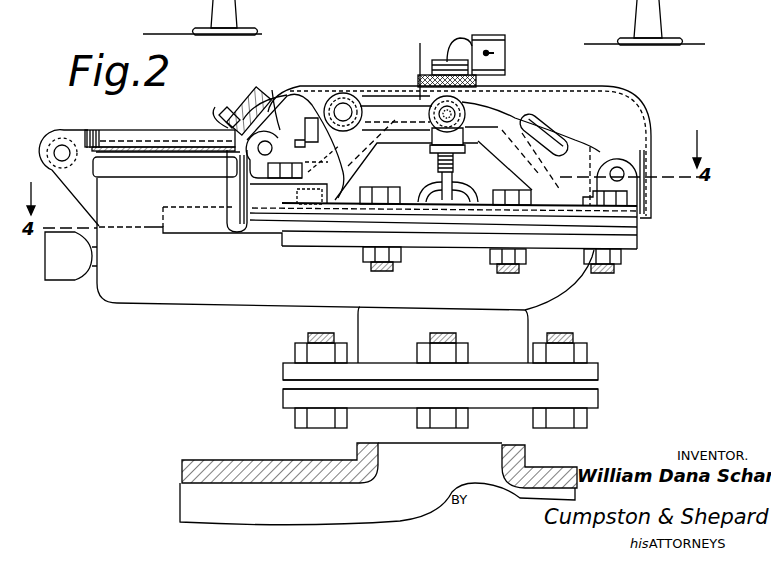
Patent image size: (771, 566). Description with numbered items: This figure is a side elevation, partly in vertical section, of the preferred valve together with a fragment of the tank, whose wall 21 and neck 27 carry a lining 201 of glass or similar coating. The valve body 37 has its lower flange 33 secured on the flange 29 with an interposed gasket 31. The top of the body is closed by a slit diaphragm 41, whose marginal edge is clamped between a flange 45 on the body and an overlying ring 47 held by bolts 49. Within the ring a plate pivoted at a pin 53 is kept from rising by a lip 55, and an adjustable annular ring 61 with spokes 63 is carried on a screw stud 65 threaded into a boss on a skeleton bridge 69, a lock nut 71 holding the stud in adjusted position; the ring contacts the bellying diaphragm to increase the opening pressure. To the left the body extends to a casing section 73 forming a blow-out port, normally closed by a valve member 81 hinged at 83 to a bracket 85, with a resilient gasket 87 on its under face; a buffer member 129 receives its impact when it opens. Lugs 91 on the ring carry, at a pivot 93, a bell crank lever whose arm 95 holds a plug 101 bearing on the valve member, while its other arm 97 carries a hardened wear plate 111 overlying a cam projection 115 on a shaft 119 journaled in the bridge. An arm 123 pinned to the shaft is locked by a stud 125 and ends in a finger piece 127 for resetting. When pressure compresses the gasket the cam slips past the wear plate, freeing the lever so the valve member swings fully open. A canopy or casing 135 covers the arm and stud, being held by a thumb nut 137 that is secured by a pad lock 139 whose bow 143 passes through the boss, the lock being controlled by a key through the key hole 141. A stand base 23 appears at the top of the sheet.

The stand 23 is at (424, 22).
The canopy or casing 135 is at (650, 124).
The valve body 37 is at (562, 280).
The buffer member 129 is at (68, 278).
The hinge 83 is at (62, 146).
The valve member 81 is at (126, 138).
The gasket 87 is at (172, 151).
The bracket 85 is at (86, 180).
The casing section 73 is at (211, 191).
The lugs 91 is at (232, 197).
The ring 47 is at (270, 195).
The diaphragm 41 is at (635, 228).
The flange 45 is at (635, 241).
The bolts 49 is at (531, 198).
The lip 55 is at (345, 220).
The annular ring 61 is at (478, 222).
The pivot 93 is at (292, 142).
The arm 97 is at (297, 92).
The arm 95 is at (266, 104).
The plug 101 is at (222, 109).
The wear plate 111 is at (313, 140).
The shaft 119 is at (352, 95).
The cam projection 115 is at (389, 128).
The arm 123 is at (389, 95).
The stud 125 is at (502, 92).
The thumb nut 137 is at (417, 60).
The bow 143 is at (460, 43).
The pad lock 139 is at (495, 35).
The key hole 141 is at (490, 52).
The lock nut 71 is at (433, 155).
The bridge 69 is at (505, 148).
The screw stud 65 is at (440, 178).
The spokes 63 is at (456, 186).
The finger piece 127 is at (552, 132).
The pivot pin 53 is at (620, 169).
The lower flange 33 is at (597, 372).
The gasket 31 is at (598, 388).
The flange 29 is at (598, 404).
The pipe 21 is at (236, 462).
The lining 201 is at (325, 484).
The pipe flange 27 is at (527, 449).